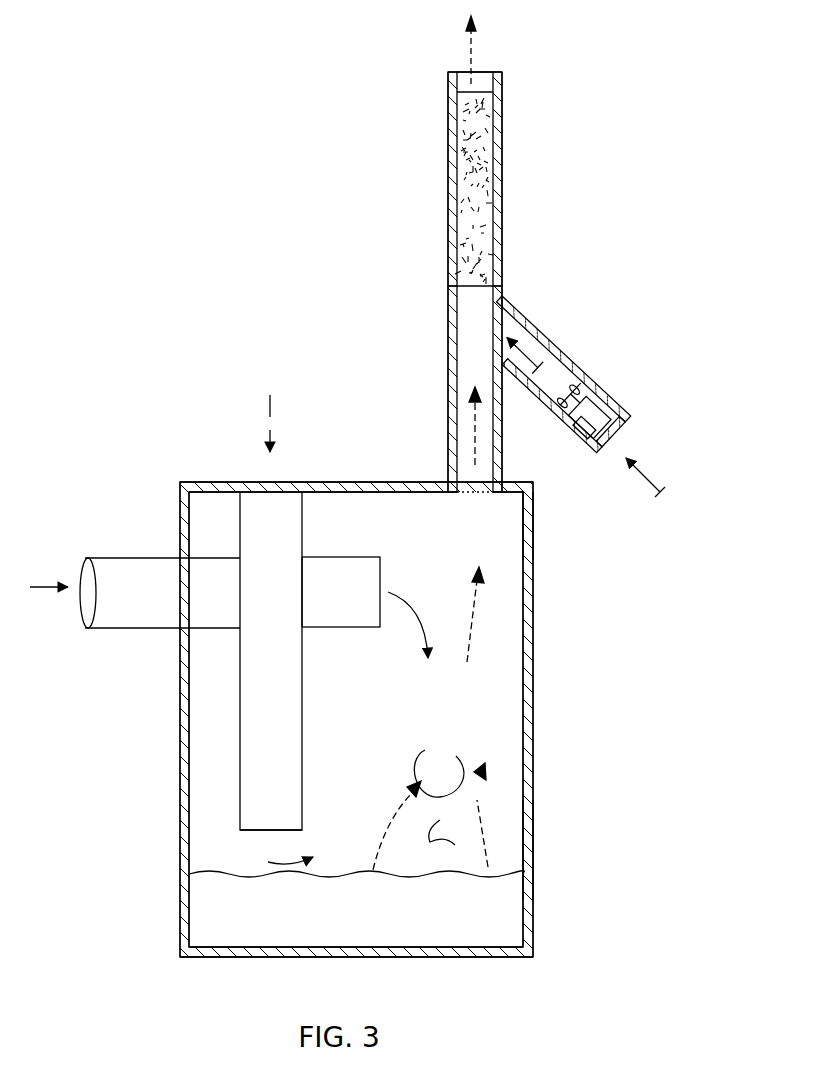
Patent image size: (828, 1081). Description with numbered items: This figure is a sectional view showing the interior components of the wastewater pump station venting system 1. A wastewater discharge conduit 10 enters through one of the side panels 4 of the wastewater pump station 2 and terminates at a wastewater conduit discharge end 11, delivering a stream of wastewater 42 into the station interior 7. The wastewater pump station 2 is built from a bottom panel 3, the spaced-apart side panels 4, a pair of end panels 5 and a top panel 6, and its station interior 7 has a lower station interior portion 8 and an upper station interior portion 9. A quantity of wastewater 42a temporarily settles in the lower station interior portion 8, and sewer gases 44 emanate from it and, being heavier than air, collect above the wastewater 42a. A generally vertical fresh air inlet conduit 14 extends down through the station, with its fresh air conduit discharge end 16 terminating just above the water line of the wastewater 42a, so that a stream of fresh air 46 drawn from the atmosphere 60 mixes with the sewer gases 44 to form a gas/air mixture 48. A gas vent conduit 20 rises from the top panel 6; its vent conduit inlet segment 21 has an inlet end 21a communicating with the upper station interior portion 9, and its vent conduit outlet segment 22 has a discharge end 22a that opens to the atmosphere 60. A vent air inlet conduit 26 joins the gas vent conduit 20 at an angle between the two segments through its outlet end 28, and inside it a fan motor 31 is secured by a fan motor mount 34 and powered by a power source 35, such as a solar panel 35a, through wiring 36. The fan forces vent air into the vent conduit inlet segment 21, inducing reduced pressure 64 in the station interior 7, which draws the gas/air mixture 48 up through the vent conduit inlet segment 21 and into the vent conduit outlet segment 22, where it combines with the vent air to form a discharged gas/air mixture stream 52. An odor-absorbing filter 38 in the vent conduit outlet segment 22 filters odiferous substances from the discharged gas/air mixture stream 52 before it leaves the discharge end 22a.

The wastewater pump station venting system 1 is at (194, 382).
The wastewater pump station 2 is at (172, 512).
The bottom panel 3 is at (278, 960).
The side panels 4 is at (182, 700).
The end panels 5 is at (200, 732).
The top panel 6 is at (366, 480).
The station interior 7 is at (496, 656).
The lower station interior portion 8 is at (510, 846).
The upper station interior portion 9 is at (538, 523).
The wastewater discharge conduit 10 is at (160, 628).
The wastewater conduit discharge end 11 is at (382, 562).
The fresh air inlet conduit 14 is at (302, 702).
The fresh air conduit discharge end 16 is at (290, 830).
The gas vent conduit 20 is at (510, 249).
The vent conduit inlet segment 21 is at (448, 438).
The inlet end 21a is at (493, 496).
The vent conduit outlet segment 22 is at (447, 172).
The discharge end 22a is at (500, 70).
The vent air inlet conduit 26 is at (549, 374).
The outlet end 28 is at (458, 322).
The fan motor 31 is at (600, 464).
The fan motor mount 34 is at (572, 455).
The power source 35 is at (634, 408).
The solar panel 35a is at (588, 390).
The wiring 36 is at (603, 452).
The odor-absorbing filter 38 is at (447, 222).
The stream of wastewater 42 is at (52, 580).
The wastewater 42a is at (446, 833).
The sewer gases 44 is at (356, 809).
The stream of fresh air 46 is at (270, 410).
The gas/air mixture 48 is at (466, 420).
The discharged gas/air mixture stream 52 is at (462, 44).
The atmosphere 60 is at (288, 72).
The reduced pressure 64 is at (448, 717).